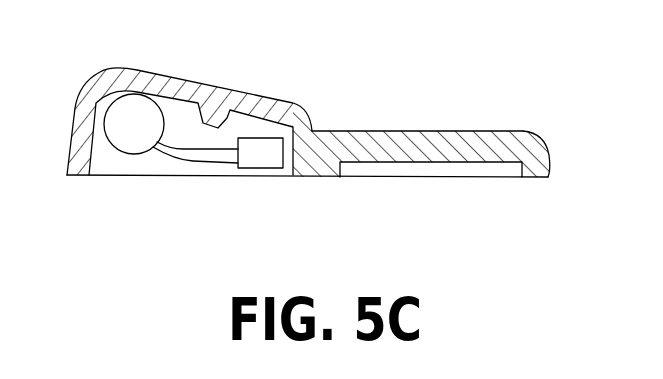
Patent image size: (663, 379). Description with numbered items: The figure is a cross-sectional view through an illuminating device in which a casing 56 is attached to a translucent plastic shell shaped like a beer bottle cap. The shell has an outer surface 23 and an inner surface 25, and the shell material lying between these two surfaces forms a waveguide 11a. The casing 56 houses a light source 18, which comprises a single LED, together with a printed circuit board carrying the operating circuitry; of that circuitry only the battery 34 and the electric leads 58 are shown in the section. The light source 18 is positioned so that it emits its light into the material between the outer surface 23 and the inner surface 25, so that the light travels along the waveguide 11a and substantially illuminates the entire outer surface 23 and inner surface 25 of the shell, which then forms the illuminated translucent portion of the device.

The casing 56 is at (193, 82).
The waveguide 11a is at (388, 147).
The outer surface 23 is at (505, 131).
The inner surface 25 is at (403, 165).
The battery 34 is at (132, 125).
The electric leads 58 is at (195, 160).
The light source 18 is at (262, 157).